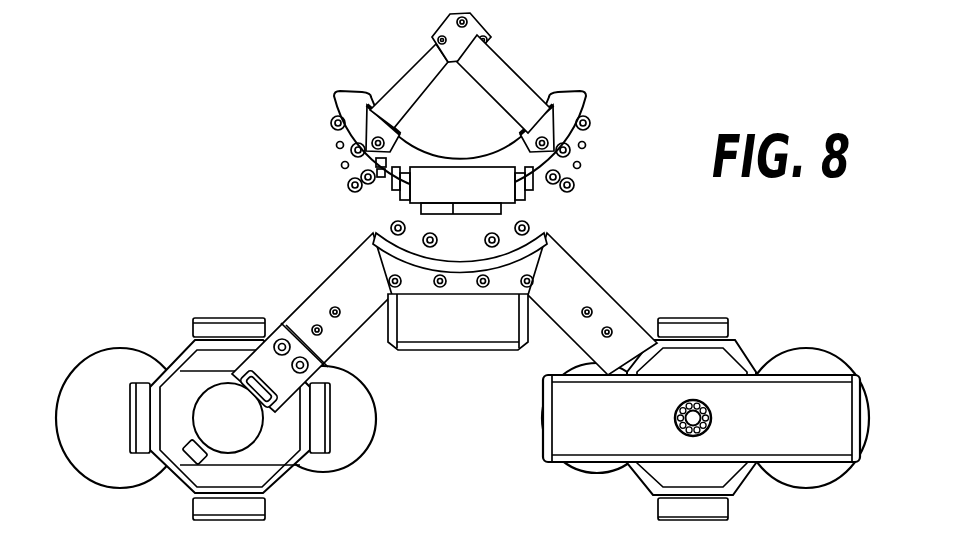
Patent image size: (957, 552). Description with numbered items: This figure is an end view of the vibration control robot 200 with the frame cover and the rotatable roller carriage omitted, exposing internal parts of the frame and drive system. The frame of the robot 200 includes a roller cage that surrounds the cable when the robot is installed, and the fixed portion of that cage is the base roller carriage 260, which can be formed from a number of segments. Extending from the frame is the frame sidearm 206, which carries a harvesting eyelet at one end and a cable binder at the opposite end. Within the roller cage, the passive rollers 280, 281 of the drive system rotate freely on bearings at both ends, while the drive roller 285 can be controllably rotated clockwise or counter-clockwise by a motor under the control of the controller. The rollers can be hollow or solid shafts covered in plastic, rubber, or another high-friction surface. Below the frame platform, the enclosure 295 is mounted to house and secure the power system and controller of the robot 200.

The robot 200 is at (213, 68).
The frame sidearm 206 is at (570, 270).
The base roller carriage 260 is at (368, 203).
The passive roller 280 is at (505, 82).
The passive roller 281 is at (412, 83).
The drive roller 285 is at (458, 177).
The enclosure 295 is at (462, 330).